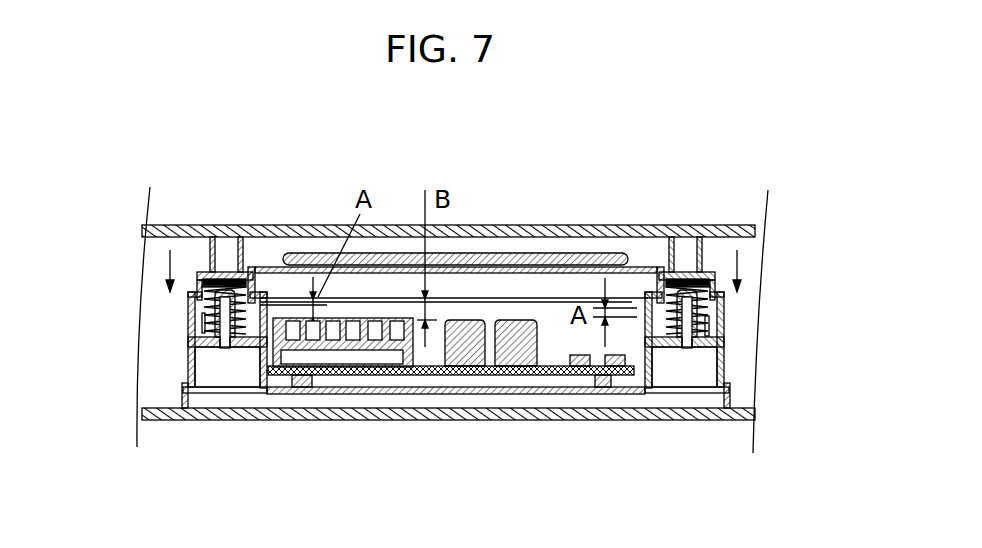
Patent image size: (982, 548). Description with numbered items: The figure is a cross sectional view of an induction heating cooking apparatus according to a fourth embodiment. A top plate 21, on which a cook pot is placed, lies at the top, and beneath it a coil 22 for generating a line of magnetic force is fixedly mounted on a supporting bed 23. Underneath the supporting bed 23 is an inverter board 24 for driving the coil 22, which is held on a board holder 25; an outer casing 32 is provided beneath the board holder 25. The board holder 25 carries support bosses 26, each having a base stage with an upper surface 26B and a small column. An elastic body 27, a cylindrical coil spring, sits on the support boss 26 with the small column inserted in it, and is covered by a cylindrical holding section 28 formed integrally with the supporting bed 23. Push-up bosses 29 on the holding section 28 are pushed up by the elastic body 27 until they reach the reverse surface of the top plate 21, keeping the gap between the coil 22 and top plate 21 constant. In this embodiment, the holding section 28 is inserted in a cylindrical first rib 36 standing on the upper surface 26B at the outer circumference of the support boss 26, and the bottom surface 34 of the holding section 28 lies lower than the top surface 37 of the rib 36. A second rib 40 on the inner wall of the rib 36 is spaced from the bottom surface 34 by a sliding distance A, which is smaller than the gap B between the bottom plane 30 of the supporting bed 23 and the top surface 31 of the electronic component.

The top plate 21 is at (398, 229).
The coil 22 is at (321, 258).
The supporting bed 23 is at (265, 275).
The inverter board 24 is at (495, 373).
The board holder 25 is at (612, 386).
The support boss 26 is at (207, 340).
The upper surface of the base stage 26B is at (188, 396).
The elastic body 27 is at (189, 340).
The holding section 28 is at (200, 280).
The push-up boss 29 is at (208, 240).
The bottom plane of supporting bed 30 is at (523, 300).
The top surface of the electronic component 31 is at (335, 345).
The outer casing 32 is at (438, 421).
The bottom surface of holding section 34 is at (198, 310).
The first rib 36 is at (188, 328).
The top surface of rib 37 is at (190, 291).
The second rib 40 is at (711, 328).